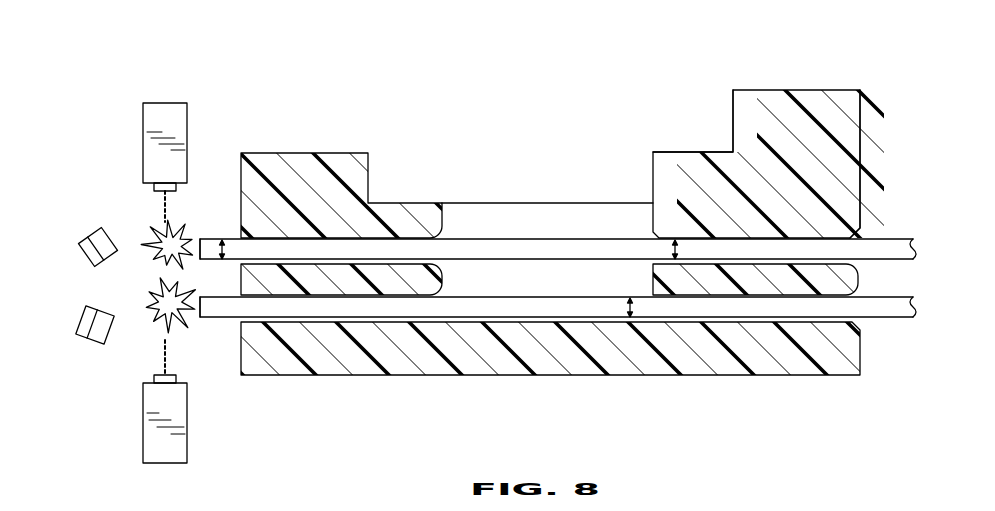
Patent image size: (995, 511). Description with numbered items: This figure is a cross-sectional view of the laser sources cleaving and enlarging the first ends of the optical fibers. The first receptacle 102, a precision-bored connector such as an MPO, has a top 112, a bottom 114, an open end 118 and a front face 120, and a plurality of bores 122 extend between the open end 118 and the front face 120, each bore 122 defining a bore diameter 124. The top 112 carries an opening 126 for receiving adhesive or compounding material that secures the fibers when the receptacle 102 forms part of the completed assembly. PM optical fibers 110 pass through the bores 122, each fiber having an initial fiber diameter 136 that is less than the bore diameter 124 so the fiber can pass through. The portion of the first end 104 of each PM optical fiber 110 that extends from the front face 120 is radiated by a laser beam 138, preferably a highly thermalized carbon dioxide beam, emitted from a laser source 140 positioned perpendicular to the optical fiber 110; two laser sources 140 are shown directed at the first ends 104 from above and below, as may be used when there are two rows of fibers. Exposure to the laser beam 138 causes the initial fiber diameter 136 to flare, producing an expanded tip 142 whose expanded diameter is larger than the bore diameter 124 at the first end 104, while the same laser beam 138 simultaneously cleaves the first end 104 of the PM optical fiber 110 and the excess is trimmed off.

The first receptacle 102 is at (788, 90).
The first end 104 is at (160, 283).
The PM optical fiber 110 is at (477, 238).
The top 112 is at (690, 152).
The bottom 114 is at (795, 378).
The open end 118 is at (862, 162).
The front face 120 is at (241, 360).
The bore 122 is at (401, 230).
The bore diameter 124 is at (675, 247).
The opening 126 is at (526, 218).
The initial fiber diameter 136 is at (223, 248).
The laser beam 138 is at (165, 208).
The laser source 140 is at (143, 118).
The expanded tip 142 is at (198, 237).